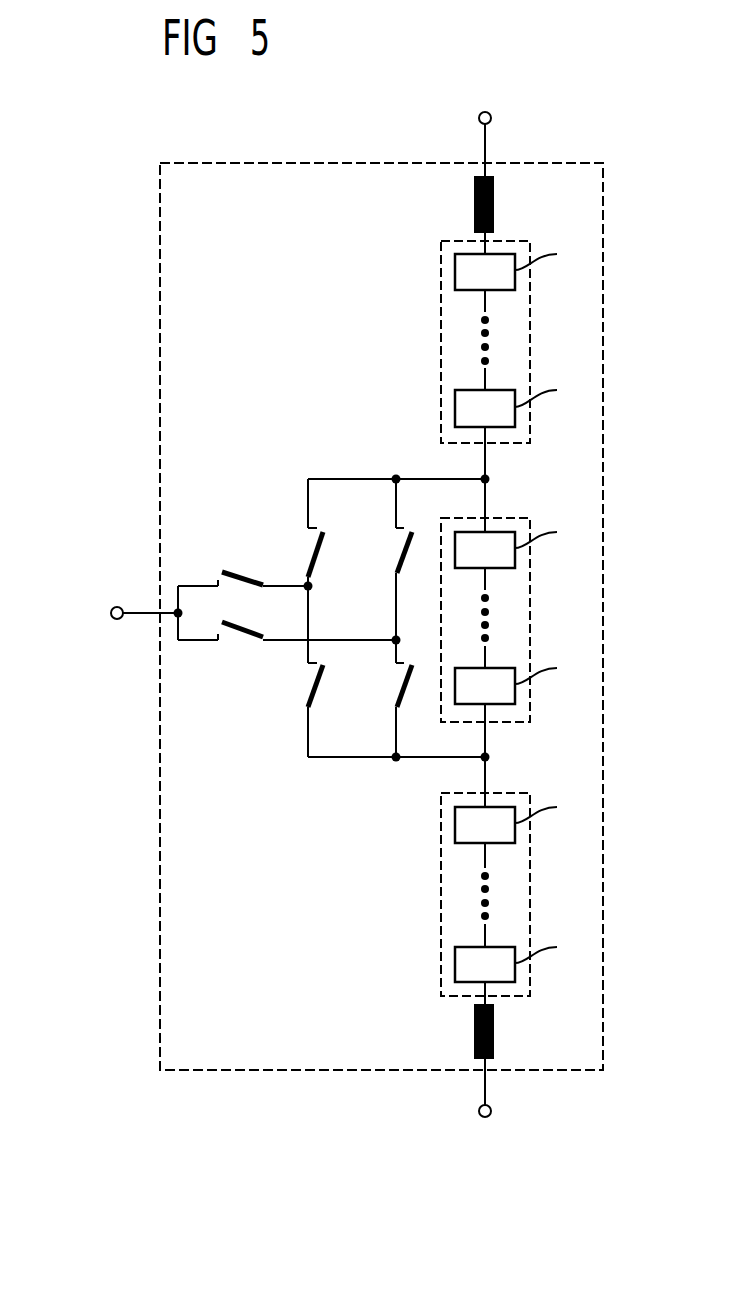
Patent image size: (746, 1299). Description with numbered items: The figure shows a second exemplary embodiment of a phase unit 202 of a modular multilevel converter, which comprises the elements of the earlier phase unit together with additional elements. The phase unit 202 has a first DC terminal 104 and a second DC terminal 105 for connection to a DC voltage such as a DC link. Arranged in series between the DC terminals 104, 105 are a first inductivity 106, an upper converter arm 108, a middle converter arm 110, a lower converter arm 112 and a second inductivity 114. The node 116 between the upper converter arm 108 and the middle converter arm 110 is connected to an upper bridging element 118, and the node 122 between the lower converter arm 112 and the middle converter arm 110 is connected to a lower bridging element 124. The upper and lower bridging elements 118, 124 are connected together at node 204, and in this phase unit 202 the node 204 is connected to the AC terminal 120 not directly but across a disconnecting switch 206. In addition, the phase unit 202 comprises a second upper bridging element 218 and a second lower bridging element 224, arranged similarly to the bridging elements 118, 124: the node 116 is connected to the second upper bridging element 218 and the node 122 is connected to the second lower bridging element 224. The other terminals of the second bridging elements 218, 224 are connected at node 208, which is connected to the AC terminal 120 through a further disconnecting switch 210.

The first DC terminal 104 is at (487, 111).
The second DC terminal 105 is at (488, 1118).
The first inductivity 106 is at (494, 205).
The upper converter arm 108 is at (530, 330).
The middle converter arm 110 is at (530, 624).
The lower converter arm 112 is at (530, 896).
The second inductivity 114 is at (494, 1033).
The node 116 is at (487, 478).
The upper bridging element 118 is at (400, 550).
The AC terminal 120 is at (111, 617).
The node 122 is at (487, 756).
The lower bridging element 124 is at (405, 678).
The phase unit 202 is at (160, 218).
The node 204 is at (397, 640).
The disconnecting switch 206 is at (243, 635).
The node 208 is at (305, 584).
The disconnecting switch 210 is at (225, 575).
The second upper bridging element 218 is at (318, 541).
The second lower bridging element 224 is at (307, 695).